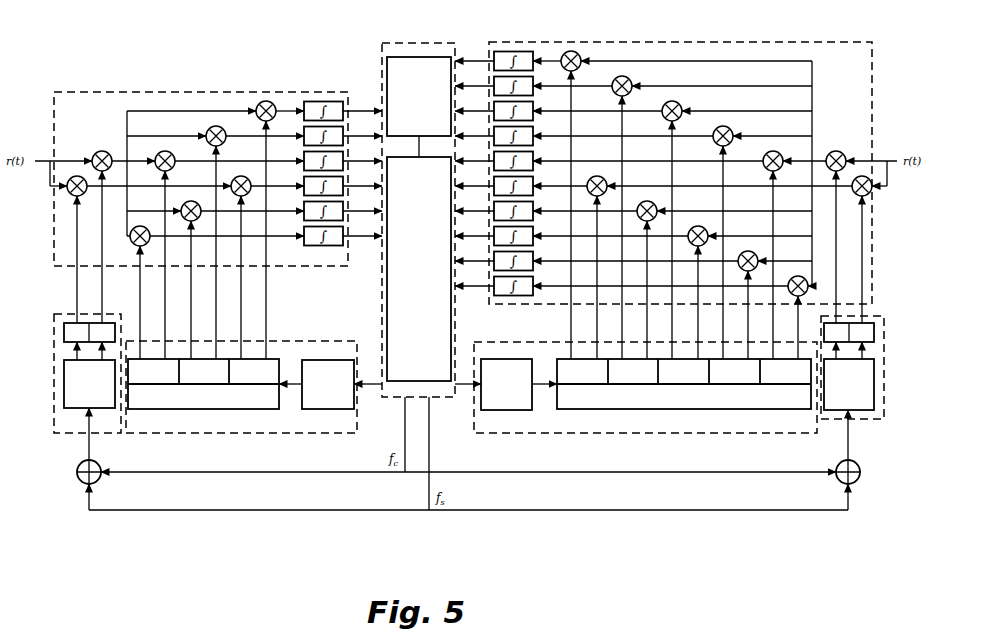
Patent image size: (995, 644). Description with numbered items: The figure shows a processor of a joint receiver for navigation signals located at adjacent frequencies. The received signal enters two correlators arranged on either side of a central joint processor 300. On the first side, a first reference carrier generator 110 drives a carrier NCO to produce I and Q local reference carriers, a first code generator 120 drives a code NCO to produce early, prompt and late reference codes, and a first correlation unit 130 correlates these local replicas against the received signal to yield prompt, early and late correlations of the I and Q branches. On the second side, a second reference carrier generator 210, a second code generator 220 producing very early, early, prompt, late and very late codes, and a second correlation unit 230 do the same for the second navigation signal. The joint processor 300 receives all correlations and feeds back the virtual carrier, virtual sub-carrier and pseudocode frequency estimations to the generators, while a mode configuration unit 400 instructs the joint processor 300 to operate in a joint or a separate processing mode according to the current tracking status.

The first reference carrier generator 110 is at (64, 433).
The first code generator 120 is at (152, 433).
The first correlation unit 130 is at (316, 91).
The second reference carrier generator 210 is at (842, 422).
The second code generator 220 is at (747, 433).
The second correlation unit 230 is at (532, 39).
The joint processor 300 is at (420, 381).
The mode configuration unit 400 is at (407, 56).